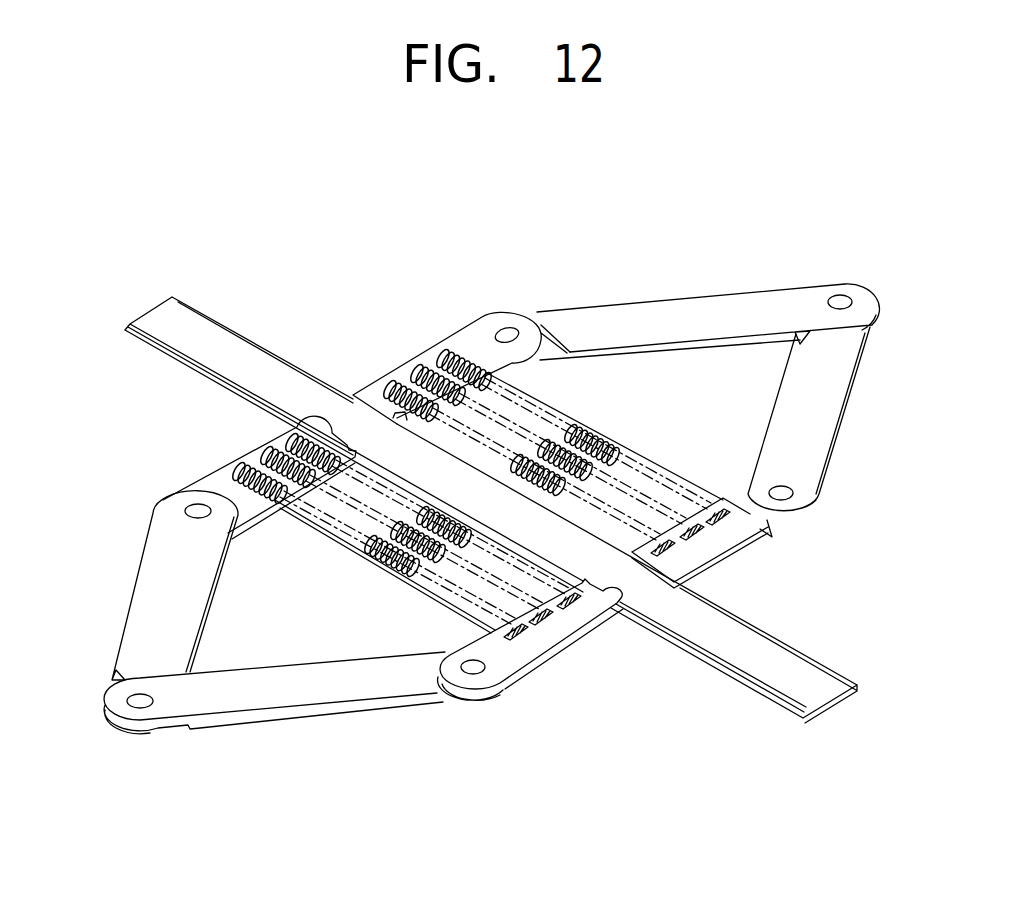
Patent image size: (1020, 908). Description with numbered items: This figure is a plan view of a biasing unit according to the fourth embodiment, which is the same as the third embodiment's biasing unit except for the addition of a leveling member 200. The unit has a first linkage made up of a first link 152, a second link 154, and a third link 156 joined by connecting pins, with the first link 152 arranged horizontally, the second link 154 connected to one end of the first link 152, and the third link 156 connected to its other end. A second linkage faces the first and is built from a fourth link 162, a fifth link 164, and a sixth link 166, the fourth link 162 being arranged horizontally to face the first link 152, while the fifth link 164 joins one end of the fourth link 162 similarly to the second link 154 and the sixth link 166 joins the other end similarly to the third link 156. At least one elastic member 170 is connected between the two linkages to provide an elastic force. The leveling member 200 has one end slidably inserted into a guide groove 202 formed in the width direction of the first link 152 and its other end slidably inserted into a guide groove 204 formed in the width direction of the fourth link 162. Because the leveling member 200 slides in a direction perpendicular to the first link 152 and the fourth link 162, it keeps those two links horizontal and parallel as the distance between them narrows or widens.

The leveling member 200 is at (215, 328).
The first link 152 is at (460, 342).
The second link 154 is at (155, 578).
The third link 156 is at (697, 302).
The fourth link 162 is at (730, 542).
The fifth link 164 is at (300, 700).
The sixth link 166 is at (835, 415).
The elastic member 170 is at (595, 436).
The guide groove 202 is at (263, 412).
The guide groove 204 is at (600, 597).